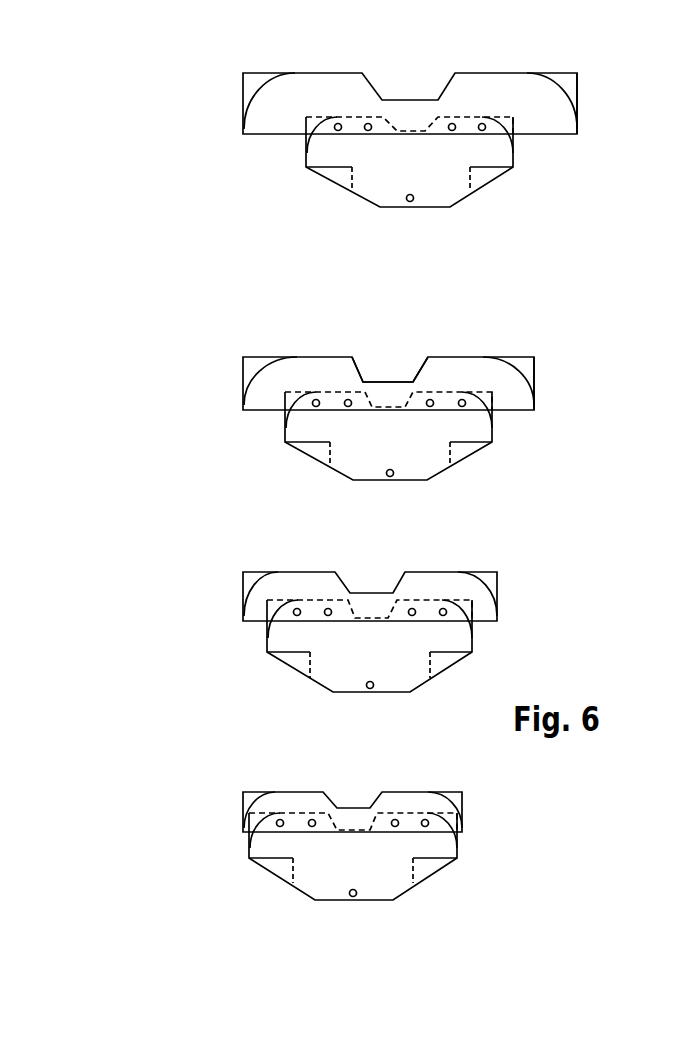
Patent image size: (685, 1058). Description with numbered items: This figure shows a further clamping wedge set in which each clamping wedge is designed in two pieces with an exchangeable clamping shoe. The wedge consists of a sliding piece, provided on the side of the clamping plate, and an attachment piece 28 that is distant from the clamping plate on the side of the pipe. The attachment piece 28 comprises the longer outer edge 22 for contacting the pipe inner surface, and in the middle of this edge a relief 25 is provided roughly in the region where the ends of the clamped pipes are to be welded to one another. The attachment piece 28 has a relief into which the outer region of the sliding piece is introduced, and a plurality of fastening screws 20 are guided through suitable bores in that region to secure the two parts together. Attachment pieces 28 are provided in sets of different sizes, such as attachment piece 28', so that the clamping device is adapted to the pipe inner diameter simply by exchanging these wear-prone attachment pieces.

The attachment piece 28 is at (621, 102).
The attachment piece 28' is at (580, 382).
The fastening screws 20 is at (485, 128).
The relief 25 is at (373, 381).
The outer edge 22 is at (442, 357).